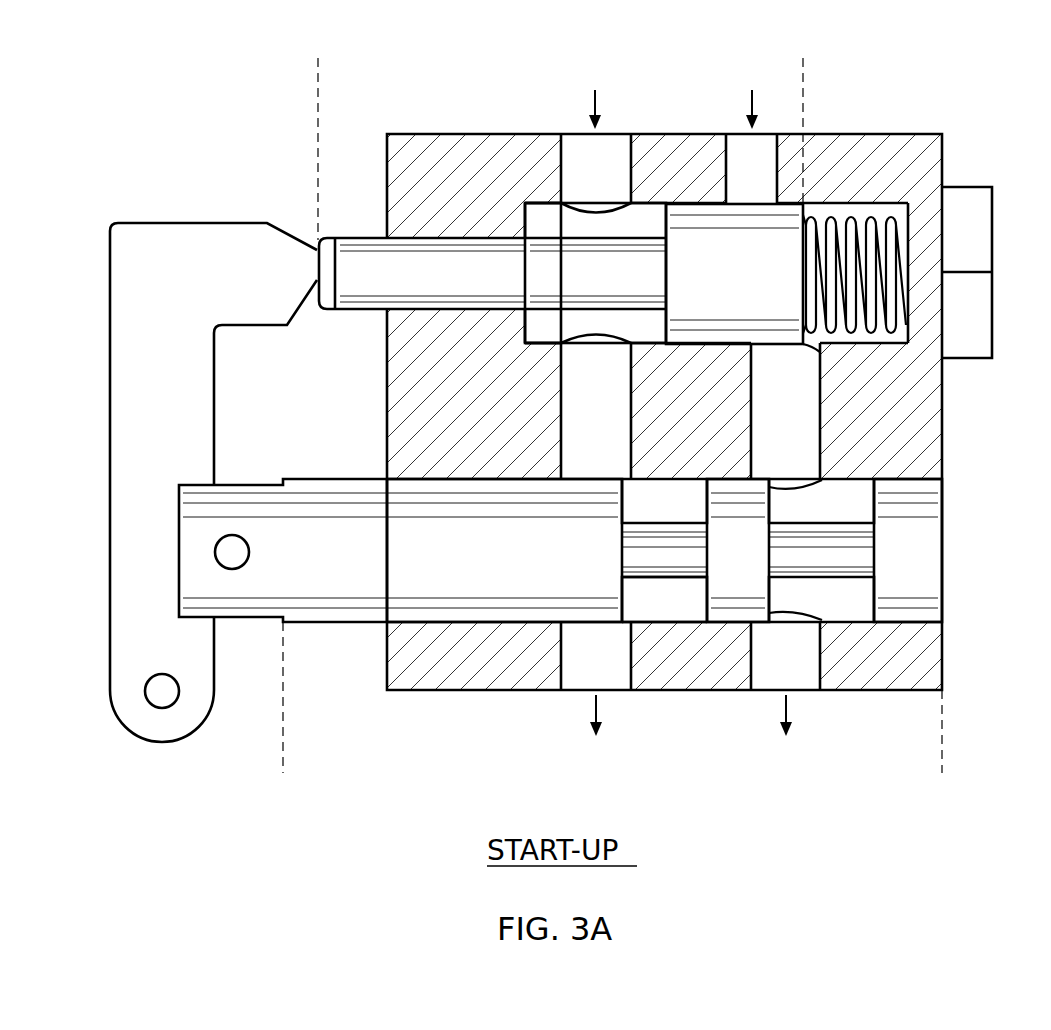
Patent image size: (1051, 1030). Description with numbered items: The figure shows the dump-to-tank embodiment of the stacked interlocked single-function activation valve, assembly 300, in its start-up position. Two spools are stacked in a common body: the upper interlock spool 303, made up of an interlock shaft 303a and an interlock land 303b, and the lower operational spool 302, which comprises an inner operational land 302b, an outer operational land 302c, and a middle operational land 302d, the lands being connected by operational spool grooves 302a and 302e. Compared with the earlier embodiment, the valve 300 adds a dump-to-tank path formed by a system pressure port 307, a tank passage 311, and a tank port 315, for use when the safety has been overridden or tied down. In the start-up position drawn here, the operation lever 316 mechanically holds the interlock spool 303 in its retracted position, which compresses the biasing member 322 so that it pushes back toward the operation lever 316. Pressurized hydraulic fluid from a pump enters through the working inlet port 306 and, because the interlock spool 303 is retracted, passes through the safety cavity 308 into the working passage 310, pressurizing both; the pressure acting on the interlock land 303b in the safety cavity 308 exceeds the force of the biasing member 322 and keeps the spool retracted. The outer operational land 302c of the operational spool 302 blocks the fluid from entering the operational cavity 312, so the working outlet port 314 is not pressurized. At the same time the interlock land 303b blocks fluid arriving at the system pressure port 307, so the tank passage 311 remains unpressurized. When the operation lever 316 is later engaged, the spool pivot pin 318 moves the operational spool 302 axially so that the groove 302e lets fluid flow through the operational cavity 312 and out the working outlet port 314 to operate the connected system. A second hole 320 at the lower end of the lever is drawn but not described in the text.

The valve 300 is at (903, 52).
The operational spool 302 is at (942, 740).
The operational spool groove 302a is at (851, 550).
The inner operational land 302b is at (915, 552).
The outer operational land 302c is at (437, 567).
The middle operational land 302d is at (723, 550).
The operational spool groove 302e is at (687, 555).
The interlock spool 303 is at (803, 87).
The interlock shaft 303a is at (630, 267).
The interlock land 303b is at (680, 267).
The working inlet port 306 is at (617, 160).
The system pressure port 307 is at (770, 159).
The safety cavity 308 is at (532, 218).
The working passage 310 is at (595, 390).
The tank passage 311 is at (795, 401).
The operational cavity 312 is at (637, 598).
The working outlet port 314 is at (572, 662).
The tank port 315 is at (805, 650).
The operation lever 316 is at (157, 280).
The spool pivot pin 318 is at (232, 552).
The lever pivot hole 320 is at (158, 691).
The biasing member 322 is at (895, 255).